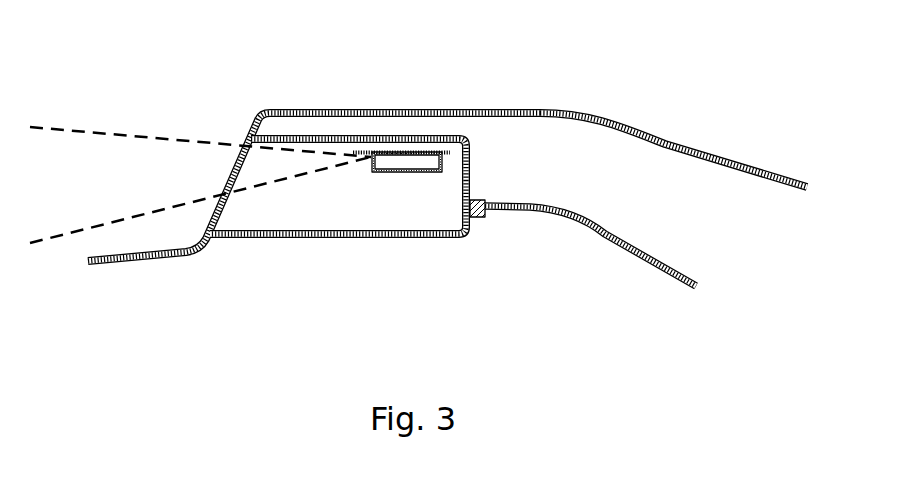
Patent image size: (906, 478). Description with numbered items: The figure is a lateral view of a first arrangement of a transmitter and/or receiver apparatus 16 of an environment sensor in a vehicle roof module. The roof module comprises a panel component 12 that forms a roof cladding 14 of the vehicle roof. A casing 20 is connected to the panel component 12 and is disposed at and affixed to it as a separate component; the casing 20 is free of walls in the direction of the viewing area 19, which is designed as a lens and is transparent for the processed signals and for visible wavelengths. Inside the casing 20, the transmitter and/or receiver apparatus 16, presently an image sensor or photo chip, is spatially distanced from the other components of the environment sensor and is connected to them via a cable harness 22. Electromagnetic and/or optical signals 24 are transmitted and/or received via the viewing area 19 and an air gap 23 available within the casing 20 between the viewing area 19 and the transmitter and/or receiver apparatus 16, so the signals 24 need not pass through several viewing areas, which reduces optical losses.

The panel component 12 is at (390, 115).
The roof cladding 14 is at (485, 116).
The transmitter and/or receiver apparatus 16 is at (428, 160).
The viewing area 19 is at (238, 172).
The casing 20 is at (353, 233).
The cable harness 22 is at (607, 233).
The air gap 23 is at (275, 162).
The electromagnetic and/or optical signals 24 is at (130, 135).